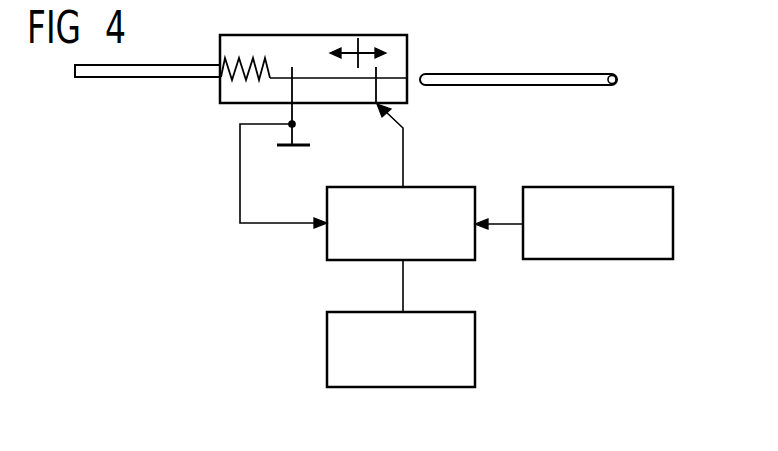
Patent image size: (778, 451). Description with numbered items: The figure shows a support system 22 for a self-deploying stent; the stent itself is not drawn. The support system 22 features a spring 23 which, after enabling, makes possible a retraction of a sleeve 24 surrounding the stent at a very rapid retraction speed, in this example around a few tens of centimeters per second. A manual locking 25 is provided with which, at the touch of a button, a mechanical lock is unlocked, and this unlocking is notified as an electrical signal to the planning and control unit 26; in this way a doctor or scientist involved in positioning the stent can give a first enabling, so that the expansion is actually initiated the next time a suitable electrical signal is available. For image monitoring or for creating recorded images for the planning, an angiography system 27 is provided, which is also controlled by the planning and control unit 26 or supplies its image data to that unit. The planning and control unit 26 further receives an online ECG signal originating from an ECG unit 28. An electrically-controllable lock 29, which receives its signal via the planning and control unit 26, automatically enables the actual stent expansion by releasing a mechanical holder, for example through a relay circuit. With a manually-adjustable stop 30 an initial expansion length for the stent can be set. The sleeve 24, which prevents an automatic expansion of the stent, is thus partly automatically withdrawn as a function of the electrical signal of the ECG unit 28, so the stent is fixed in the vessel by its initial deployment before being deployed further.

The support system 22 is at (262, 260).
The spring 23 is at (240, 64).
The sleeve 24 is at (525, 72).
The manual locking 25 is at (295, 117).
The planning and control unit 26 is at (446, 186).
The angiography system 27 is at (327, 352).
The ECG unit 28 is at (581, 186).
The electrically-controllable lock 29 is at (377, 70).
The manually-adjustable stop 30 is at (359, 42).